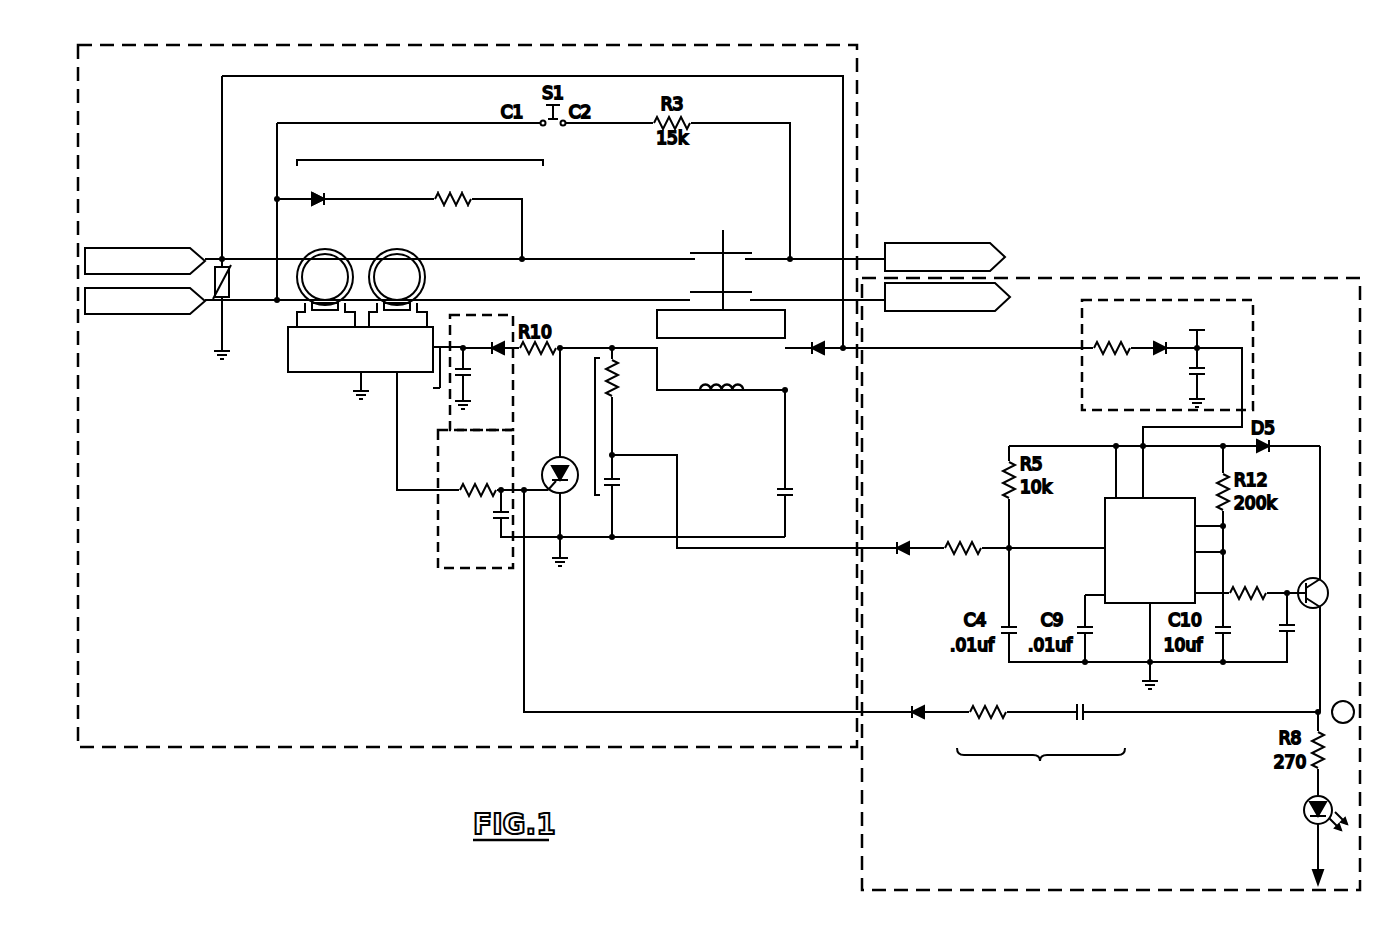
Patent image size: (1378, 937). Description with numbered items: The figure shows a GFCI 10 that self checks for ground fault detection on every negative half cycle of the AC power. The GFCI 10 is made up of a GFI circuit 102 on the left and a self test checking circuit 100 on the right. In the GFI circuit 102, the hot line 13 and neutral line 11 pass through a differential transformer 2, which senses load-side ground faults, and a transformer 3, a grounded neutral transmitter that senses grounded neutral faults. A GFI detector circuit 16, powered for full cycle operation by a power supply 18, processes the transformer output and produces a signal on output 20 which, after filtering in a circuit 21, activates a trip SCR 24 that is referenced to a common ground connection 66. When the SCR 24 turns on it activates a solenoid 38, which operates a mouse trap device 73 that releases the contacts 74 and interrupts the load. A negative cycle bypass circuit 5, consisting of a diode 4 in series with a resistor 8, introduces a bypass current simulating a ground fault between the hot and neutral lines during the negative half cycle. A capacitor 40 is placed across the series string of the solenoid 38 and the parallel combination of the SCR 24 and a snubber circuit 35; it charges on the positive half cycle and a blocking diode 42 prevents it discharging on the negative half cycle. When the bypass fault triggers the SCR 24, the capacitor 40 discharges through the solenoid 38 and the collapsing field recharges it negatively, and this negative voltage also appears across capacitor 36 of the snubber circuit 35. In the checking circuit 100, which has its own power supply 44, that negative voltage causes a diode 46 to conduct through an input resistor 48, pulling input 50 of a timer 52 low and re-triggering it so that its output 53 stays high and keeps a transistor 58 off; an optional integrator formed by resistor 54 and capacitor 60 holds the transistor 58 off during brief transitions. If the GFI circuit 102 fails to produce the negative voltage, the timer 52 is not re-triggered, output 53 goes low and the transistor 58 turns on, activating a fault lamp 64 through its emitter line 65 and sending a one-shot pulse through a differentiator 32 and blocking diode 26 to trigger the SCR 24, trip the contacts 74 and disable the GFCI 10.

The GFCI 10 is at (976, 120).
The GFI circuit 102 is at (860, 95).
The self test checking circuit 100 is at (1295, 278).
The hot line 13 is at (220, 260).
The neutral line 11 is at (208, 302).
The differential transformer 2 is at (298, 262).
The transformer 3 is at (425, 284).
The diode 4 is at (322, 206).
The negative cycle bypass circuit 5 is at (410, 171).
The resistor 8 is at (470, 199).
The GFI detector circuit 16 is at (318, 372).
The power supply 18 is at (513, 318).
The output 20 is at (400, 490).
The circuit 21 is at (466, 568).
The SCR 24 is at (555, 461).
The ground connection 66 is at (566, 546).
The snubber circuit 35 is at (605, 426).
The capacitor 36 is at (612, 500).
The contacts 74 is at (712, 292).
The mouse trap device 73 is at (665, 300).
The solenoid 38 is at (722, 420).
The capacitor 40 is at (788, 498).
The blocking diode 42 is at (818, 343).
The power supply 44 is at (1255, 336).
The timer 52 is at (1166, 498).
The input 50 is at (1062, 548).
The output 53 is at (1195, 591).
The diode 46 is at (902, 542).
The resistor R5 48 is at (960, 543).
The resistor 54 is at (1268, 576).
The transistor 58 is at (1325, 580).
The emitter output line 65 is at (1318, 666).
The capacitor 60 is at (1292, 636).
The blocking diode 26 is at (916, 704).
The differentiator 32 is at (1041, 736).
The fault lamp 64 is at (1305, 804).